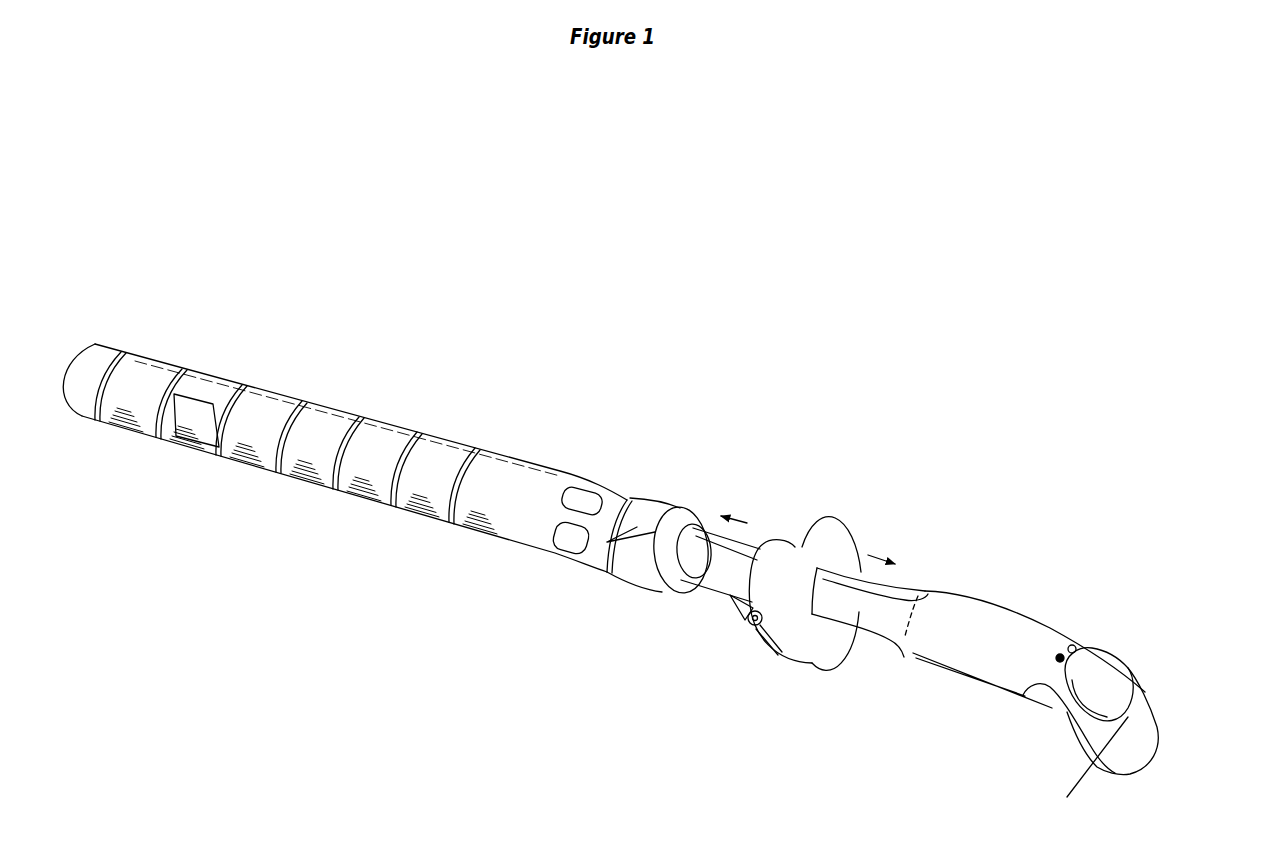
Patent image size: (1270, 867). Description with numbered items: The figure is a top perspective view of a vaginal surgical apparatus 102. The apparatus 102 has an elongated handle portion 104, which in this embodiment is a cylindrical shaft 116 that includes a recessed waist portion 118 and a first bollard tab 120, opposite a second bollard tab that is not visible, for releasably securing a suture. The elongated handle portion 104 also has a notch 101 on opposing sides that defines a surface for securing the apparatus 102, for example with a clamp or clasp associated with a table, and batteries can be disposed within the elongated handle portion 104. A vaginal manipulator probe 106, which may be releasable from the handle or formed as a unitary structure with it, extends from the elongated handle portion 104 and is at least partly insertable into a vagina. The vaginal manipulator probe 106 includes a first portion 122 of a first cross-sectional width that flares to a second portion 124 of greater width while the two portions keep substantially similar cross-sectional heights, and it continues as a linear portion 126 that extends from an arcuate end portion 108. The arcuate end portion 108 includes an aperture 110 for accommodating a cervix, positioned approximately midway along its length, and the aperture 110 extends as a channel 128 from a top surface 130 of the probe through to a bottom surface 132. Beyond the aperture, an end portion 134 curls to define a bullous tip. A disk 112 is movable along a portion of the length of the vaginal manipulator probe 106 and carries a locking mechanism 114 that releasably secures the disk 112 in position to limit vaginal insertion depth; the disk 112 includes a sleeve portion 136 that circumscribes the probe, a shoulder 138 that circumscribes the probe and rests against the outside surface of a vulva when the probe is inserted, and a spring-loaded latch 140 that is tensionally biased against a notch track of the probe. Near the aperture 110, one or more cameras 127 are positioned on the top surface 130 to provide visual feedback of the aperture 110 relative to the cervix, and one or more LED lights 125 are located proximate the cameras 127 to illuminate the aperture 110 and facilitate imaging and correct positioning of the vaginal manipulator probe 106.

The apparatus 102 is at (139, 288).
The elongated handle portion 104 is at (246, 491).
The notch 101 is at (195, 440).
The cylindrical shaft 116 is at (385, 437).
The recessed waist portion 118 is at (580, 557).
The first bollard tab 120 is at (630, 563).
The first portion 122 is at (737, 542).
The disk 112 is at (827, 540).
The shoulder 138 is at (843, 547).
The sleeve portion 136 is at (752, 627).
The locking mechanism 114 is at (783, 660).
The spring-loaded latch 140 is at (783, 658).
The vaginal manipulator probe 106 is at (1018, 594).
The linear portion 126 is at (847, 620).
The second portion 124 is at (962, 613).
The arcuate end portion 108 is at (1020, 694).
The bottom surface 132 is at (1028, 714).
The channel 128 is at (1067, 797).
The top surface 130 is at (1147, 737).
The end portion 134 is at (1143, 767).
The aperture 110 is at (1105, 672).
The LED lights 125 is at (1056, 647).
The cameras 127 is at (1077, 646).